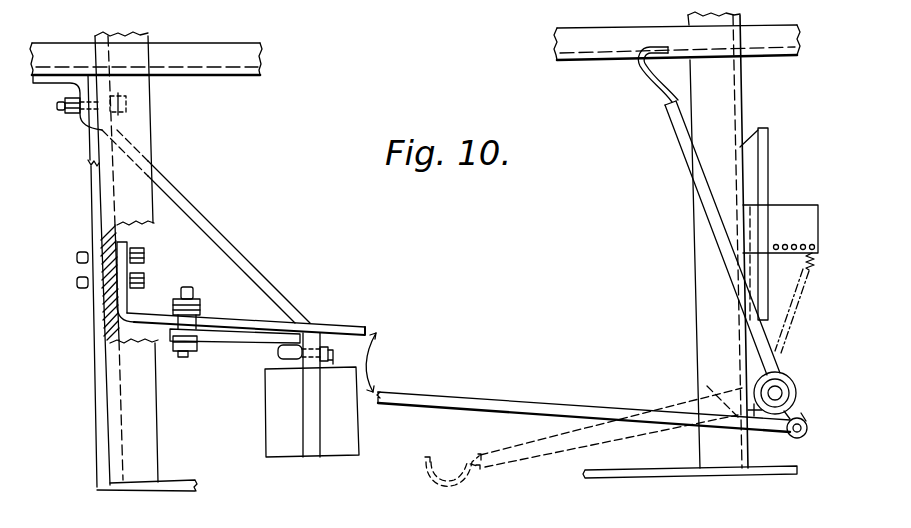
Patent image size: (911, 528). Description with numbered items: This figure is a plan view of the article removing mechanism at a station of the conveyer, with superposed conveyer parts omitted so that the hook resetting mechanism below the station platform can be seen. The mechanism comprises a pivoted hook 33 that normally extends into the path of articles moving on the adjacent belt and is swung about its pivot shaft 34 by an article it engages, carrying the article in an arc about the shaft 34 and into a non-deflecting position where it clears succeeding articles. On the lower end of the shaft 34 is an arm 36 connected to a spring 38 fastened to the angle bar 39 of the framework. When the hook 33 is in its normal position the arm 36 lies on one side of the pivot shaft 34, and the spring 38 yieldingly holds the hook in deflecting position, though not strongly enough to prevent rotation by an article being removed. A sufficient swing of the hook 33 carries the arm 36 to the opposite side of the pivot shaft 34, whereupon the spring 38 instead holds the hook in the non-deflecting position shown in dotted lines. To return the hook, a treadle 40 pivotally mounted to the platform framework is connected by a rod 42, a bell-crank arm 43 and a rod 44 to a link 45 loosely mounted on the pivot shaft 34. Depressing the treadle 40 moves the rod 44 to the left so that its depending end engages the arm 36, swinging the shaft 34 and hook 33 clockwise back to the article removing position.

The hook 33 is at (692, 157).
The pivot shaft 34 is at (777, 391).
The arm 36 is at (707, 386).
The spring 38 is at (783, 333).
The angle bar 39 is at (779, 224).
The treadle 40 is at (312, 395).
The rod 42 is at (297, 358).
The bell-crank arm 43 is at (226, 338).
The rod 44 is at (343, 328).
The link 45 is at (802, 417).